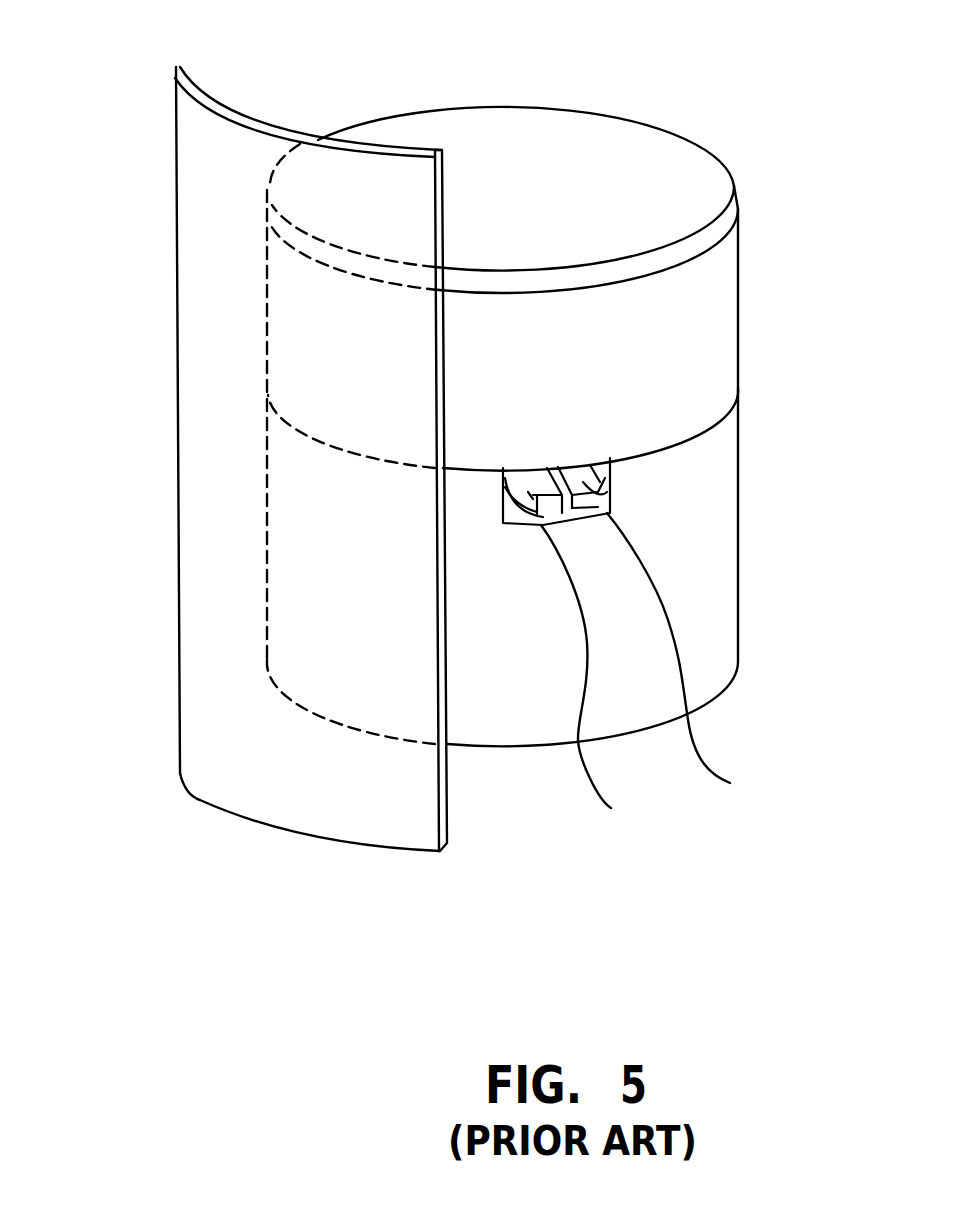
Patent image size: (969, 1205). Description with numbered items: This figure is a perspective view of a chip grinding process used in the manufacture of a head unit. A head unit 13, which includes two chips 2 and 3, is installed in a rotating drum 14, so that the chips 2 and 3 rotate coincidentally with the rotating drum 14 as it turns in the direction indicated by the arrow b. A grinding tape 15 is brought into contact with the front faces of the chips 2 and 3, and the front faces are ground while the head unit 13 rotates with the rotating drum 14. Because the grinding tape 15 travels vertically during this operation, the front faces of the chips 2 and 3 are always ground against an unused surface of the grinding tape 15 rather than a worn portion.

The chip 2 is at (683, 661).
The chip 3 is at (587, 680).
The head unit 13 is at (612, 477).
The rotating drum 14 is at (732, 330).
The grinding tape 15 is at (178, 334).
The arrow b is at (572, 62).